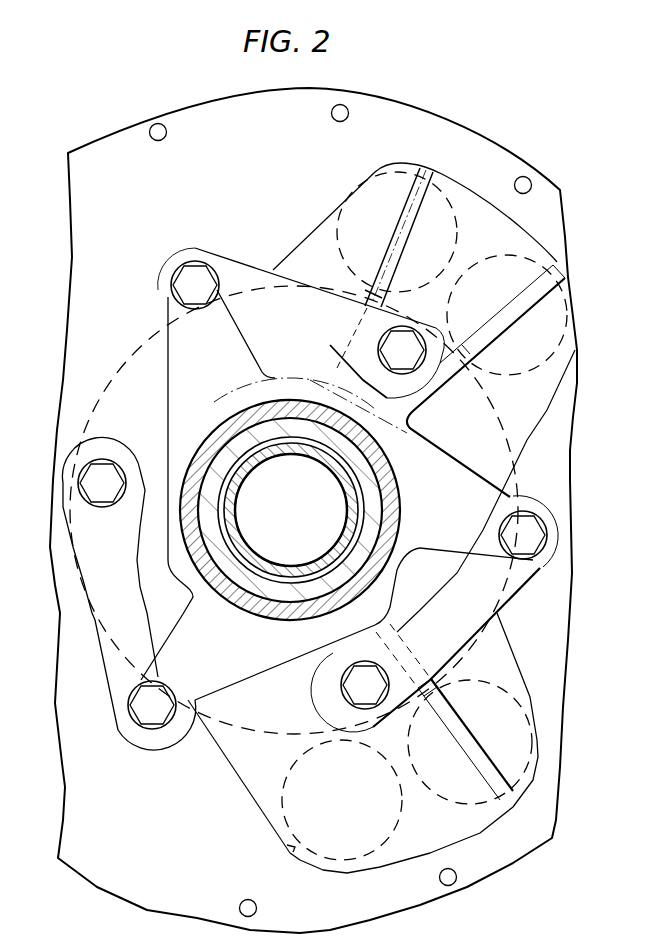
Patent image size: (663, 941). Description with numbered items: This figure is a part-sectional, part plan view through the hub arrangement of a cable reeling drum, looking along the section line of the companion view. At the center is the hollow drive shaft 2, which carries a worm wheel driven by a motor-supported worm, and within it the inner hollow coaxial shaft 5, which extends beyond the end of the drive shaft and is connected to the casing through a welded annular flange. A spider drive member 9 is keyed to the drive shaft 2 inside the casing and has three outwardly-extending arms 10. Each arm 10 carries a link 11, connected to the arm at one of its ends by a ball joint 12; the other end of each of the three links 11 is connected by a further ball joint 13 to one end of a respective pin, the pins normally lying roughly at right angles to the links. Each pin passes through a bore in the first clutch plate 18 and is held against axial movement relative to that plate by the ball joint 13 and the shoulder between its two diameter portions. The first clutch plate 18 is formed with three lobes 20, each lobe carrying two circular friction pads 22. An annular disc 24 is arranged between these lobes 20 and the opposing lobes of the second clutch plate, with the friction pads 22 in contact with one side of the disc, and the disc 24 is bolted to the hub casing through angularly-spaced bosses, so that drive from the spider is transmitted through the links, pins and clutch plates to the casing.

The drive shaft 2 is at (410, 481).
The inner hollow coaxial shaft 5 is at (273, 457).
The spider drive member 9 is at (318, 398).
The arm 10 is at (218, 376).
The link 11 is at (257, 297).
The ball joint 12 is at (538, 568).
The ball joint 13 is at (342, 690).
The first clutch plate 18 is at (178, 601).
The lobe 20 is at (260, 793).
The friction pad 22 is at (289, 854).
The annular disc 24 is at (220, 796).